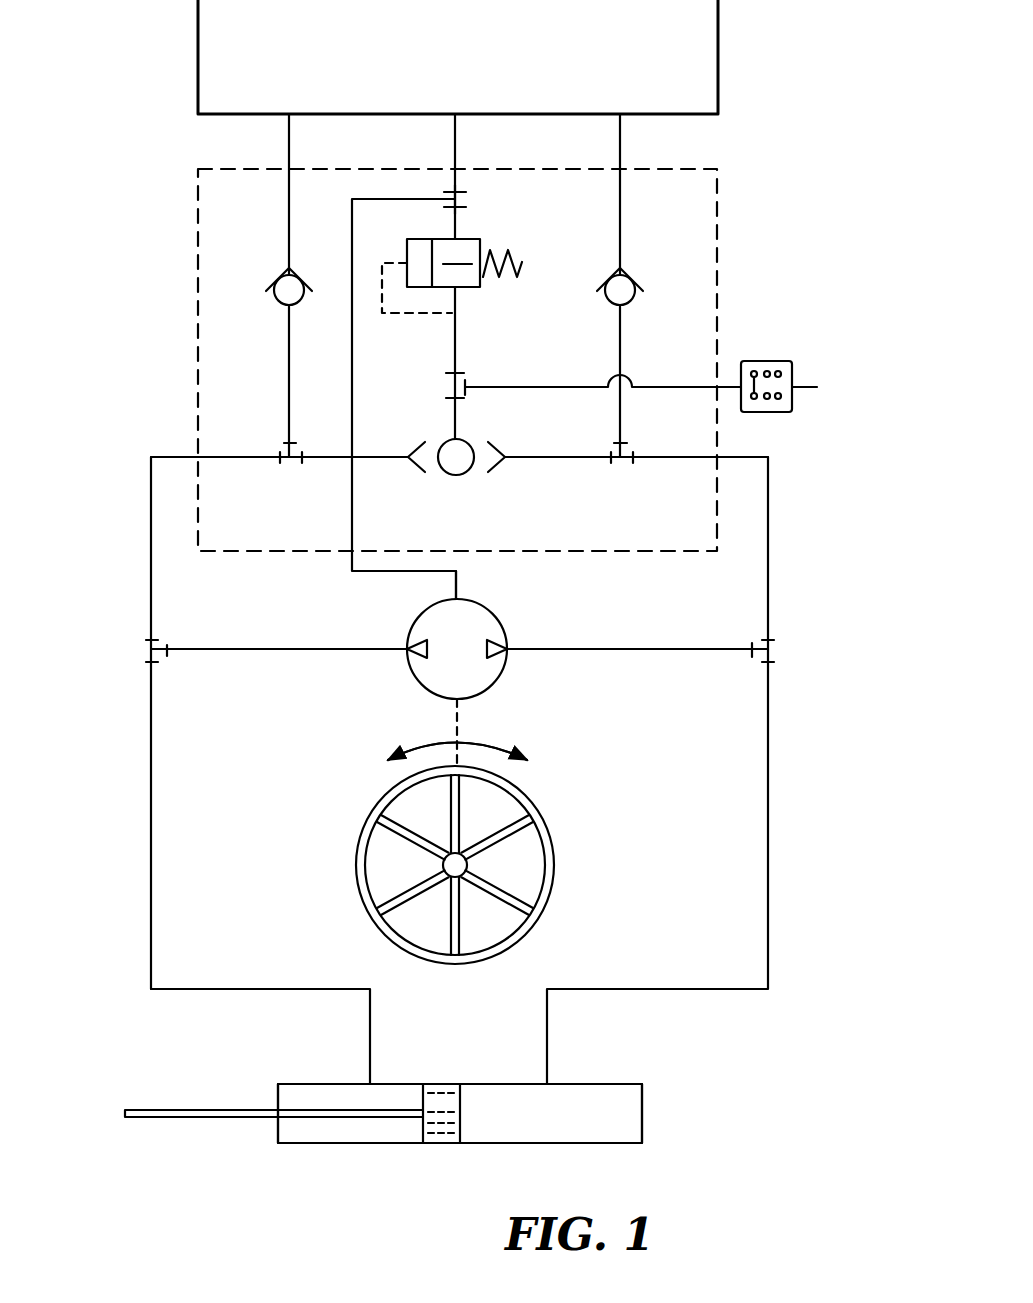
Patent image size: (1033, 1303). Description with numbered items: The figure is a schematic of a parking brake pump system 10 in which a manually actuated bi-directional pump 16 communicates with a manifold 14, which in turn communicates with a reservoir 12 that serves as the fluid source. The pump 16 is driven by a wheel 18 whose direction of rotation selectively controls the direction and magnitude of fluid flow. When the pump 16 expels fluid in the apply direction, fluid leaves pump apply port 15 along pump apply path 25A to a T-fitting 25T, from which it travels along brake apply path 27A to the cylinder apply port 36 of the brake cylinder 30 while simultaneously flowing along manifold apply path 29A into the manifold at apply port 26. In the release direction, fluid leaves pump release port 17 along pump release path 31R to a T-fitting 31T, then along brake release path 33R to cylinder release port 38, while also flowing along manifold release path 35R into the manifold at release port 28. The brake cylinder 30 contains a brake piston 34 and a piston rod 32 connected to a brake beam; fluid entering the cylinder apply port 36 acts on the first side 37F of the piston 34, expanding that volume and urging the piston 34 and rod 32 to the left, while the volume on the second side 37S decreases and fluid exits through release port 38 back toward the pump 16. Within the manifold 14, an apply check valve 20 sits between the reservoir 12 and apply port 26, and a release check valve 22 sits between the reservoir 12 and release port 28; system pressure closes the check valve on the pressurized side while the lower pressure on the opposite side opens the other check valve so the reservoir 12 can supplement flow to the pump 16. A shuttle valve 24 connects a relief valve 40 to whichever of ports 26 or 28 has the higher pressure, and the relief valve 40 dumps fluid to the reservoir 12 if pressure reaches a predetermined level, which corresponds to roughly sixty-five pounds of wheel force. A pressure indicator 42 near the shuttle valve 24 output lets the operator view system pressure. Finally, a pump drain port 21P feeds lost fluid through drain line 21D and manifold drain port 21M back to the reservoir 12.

The pump system 10 is at (145, 225).
The reservoir 12 is at (484, 42).
The manifold 14 is at (598, 560).
The pump apply port 15 is at (520, 640).
The pump 16 is at (470, 652).
The pump release port 17 is at (401, 658).
The wheel 18 is at (545, 825).
The apply check valve 20 is at (647, 312).
The manifold drain port 21M is at (470, 197).
The drain line 21D is at (355, 512).
The drain port 21P is at (463, 596).
The release check valve 22 is at (271, 309).
The shuttle valve 24 is at (481, 480).
The pump apply path 25A is at (665, 655).
The T-fitting 25T is at (782, 653).
The apply port 26 is at (735, 450).
The brake apply path 27A is at (773, 849).
The release port 28 is at (190, 446).
The manifold apply path 29A is at (628, 405).
The brake cylinder 30 is at (412, 1154).
The pump release path 31R is at (247, 655).
The T-fitting 31T is at (145, 647).
The piston rod 32 is at (203, 1120).
The brake release path 33R is at (150, 781).
The brake piston 34 is at (447, 1097).
The manifold release path 35R is at (286, 392).
The cylinder apply port 36 is at (549, 1080).
The second side 37S is at (302, 1100).
The first side 37F is at (623, 1128).
The cylinder release port 38 is at (350, 1062).
The relief valve 40 is at (481, 320).
The pressure indicator 42 is at (767, 360).